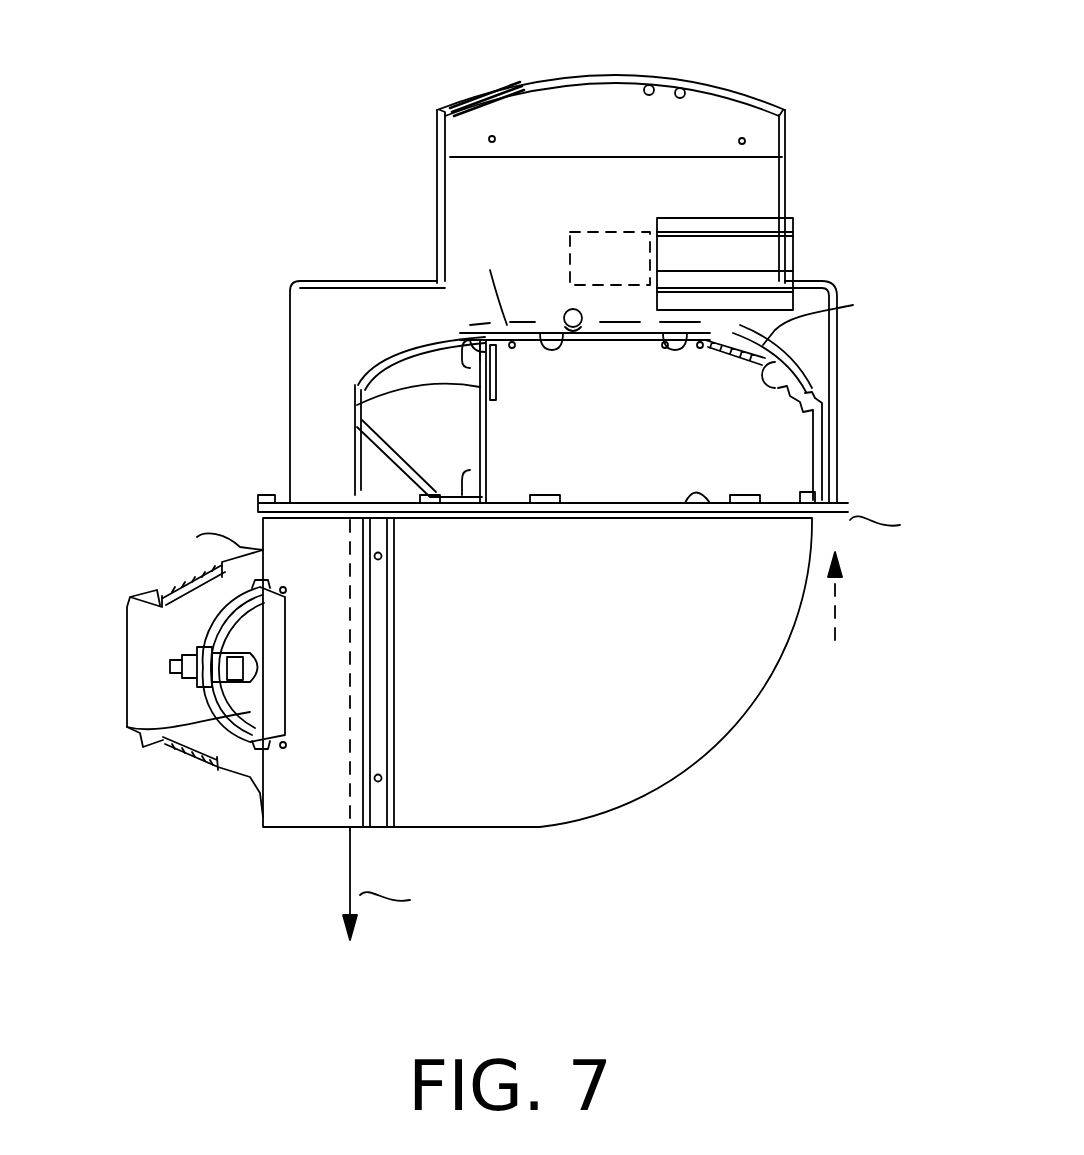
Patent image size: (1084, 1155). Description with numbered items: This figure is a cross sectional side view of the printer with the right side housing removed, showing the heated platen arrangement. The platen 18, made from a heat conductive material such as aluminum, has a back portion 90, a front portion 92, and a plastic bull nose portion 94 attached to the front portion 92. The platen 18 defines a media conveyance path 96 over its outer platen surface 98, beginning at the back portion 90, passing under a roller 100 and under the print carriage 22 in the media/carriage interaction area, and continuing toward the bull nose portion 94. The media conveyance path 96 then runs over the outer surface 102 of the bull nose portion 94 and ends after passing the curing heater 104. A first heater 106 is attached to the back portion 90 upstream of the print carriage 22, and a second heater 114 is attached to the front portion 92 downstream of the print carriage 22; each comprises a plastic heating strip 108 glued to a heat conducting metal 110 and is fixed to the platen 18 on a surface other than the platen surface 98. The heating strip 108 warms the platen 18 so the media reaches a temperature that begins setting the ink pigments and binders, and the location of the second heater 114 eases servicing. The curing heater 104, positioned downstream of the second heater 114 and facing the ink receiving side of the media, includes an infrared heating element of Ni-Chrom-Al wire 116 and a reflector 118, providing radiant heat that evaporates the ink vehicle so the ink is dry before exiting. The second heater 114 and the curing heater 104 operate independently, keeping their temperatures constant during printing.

The platen 18 is at (700, 505).
The print carriage 22 is at (620, 228).
The back portion 90 is at (763, 390).
The front portion 92 is at (560, 333).
The bull nose portion 94 is at (410, 345).
The media conveyance path 96 is at (223, 463).
The outer platen surface 98 is at (612, 320).
The roller 100 is at (565, 312).
The outer surface 102 is at (385, 358).
The curing heater 104 is at (197, 537).
The first heater 106 is at (728, 372).
The plastic heating strip 108 is at (497, 375).
The heat conducting metal 110 is at (358, 398).
The second heater 114 is at (505, 395).
The Ni-Chrom-Al wire 116 is at (257, 743).
The reflector 118 is at (127, 730).